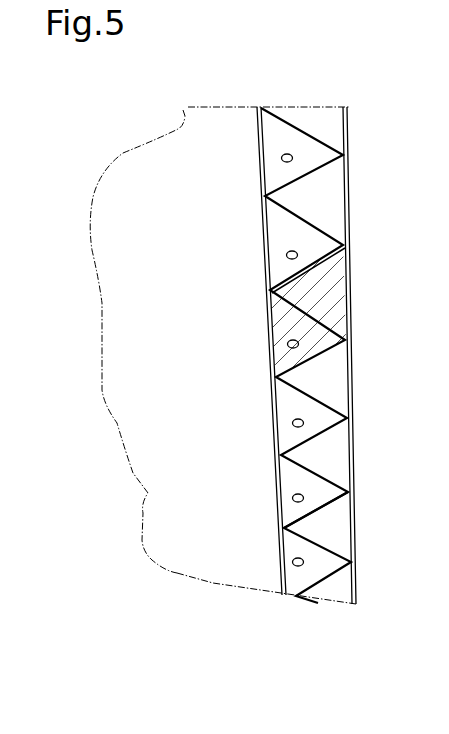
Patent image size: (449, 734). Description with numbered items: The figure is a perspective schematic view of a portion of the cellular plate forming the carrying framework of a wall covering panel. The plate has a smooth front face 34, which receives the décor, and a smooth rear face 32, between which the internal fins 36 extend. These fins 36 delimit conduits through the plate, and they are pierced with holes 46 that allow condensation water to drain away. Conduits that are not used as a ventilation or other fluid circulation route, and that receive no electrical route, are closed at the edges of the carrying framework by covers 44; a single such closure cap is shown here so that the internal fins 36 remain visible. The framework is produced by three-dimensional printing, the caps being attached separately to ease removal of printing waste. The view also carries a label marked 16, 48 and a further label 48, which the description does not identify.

The cover layer 16 is at (348, 180).
The rear face 32 is at (313, 334).
The front face 34 is at (243, 573).
The fins 36 is at (326, 487).
The covers 44 is at (339, 298).
The holes 46 is at (285, 153).
The core structure 48 is at (343, 334).